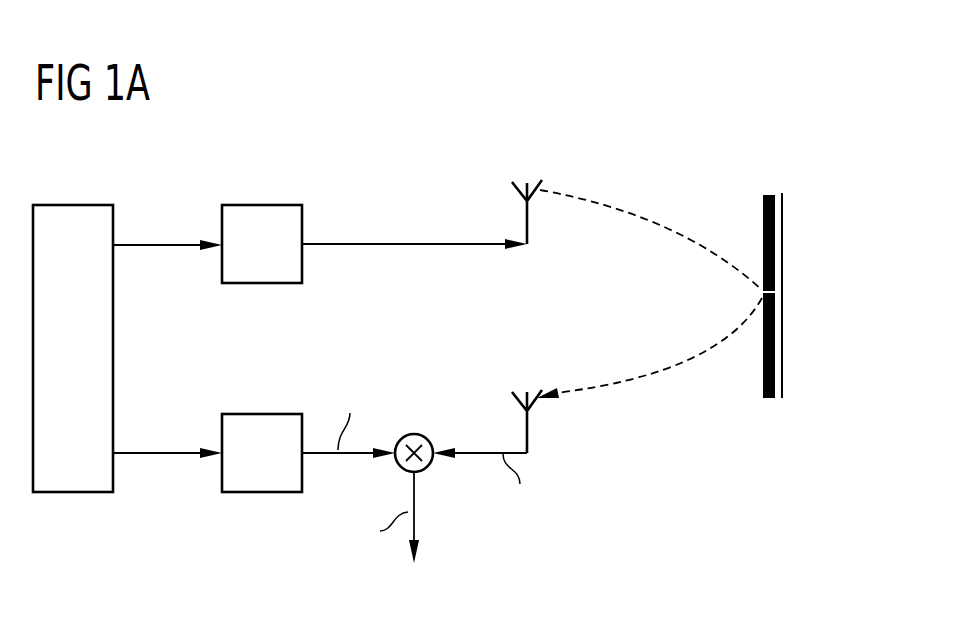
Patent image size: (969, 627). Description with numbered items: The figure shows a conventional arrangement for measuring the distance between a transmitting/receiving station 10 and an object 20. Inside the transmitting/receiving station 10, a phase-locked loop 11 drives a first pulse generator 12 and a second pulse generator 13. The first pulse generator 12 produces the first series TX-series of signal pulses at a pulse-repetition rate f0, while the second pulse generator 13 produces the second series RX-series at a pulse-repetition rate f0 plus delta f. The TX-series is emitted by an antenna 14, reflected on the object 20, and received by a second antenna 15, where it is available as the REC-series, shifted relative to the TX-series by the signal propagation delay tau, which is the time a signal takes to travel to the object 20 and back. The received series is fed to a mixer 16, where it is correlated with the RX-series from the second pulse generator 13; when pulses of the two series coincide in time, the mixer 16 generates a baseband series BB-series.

The transmitting/receiving station 10 is at (346, 170).
The phase-locked loop 11 is at (73, 204).
The first pulse generator 12 is at (263, 204).
The second pulse generator 13 is at (263, 413).
The antenna 14 is at (525, 182).
The second antenna 15 is at (522, 391).
The mixer 16 is at (414, 432).
The object 20 is at (772, 194).